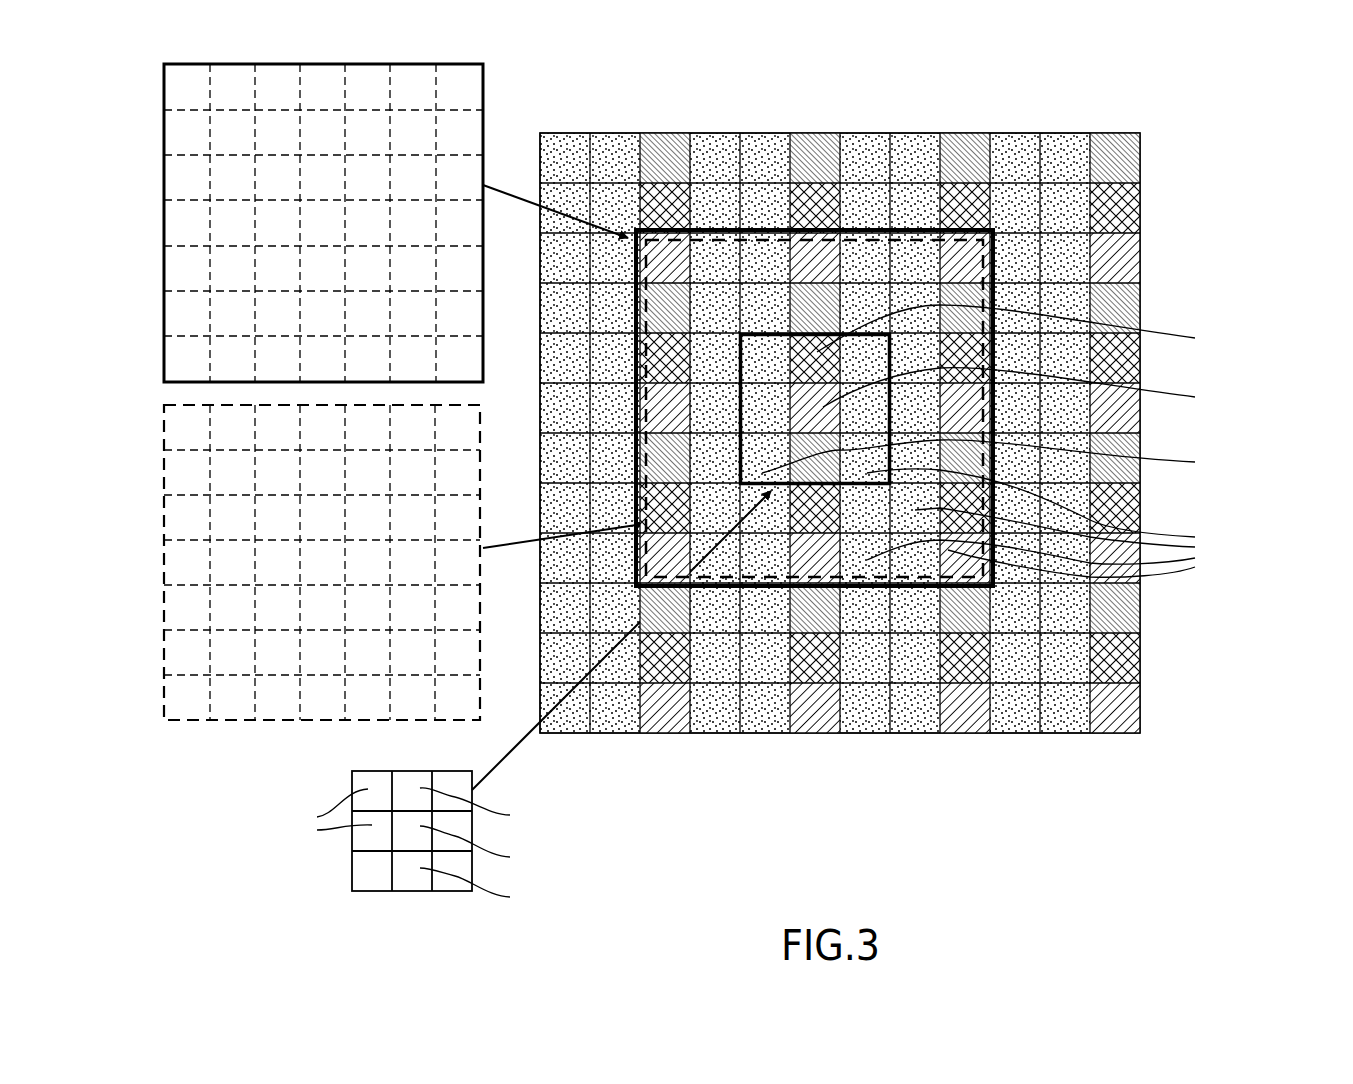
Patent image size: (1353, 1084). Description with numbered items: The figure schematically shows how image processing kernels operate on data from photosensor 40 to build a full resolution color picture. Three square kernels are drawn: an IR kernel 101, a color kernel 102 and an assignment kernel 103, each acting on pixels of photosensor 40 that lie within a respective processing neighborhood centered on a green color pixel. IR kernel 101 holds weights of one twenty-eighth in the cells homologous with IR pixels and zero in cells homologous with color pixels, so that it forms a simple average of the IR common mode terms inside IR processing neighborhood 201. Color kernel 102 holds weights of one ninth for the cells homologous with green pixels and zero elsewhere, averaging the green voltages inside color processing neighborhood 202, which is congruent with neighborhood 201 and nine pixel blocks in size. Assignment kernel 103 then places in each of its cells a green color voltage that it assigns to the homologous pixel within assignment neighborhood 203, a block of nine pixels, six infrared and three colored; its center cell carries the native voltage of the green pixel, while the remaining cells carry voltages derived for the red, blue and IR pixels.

The photosensor 40 is at (943, 392).
The IR kernel 101 is at (142, 84).
The color kernel 102 is at (142, 429).
The assignment kernel 103 is at (323, 771).
The IR processing neighborhood 201 is at (965, 228).
The color processing neighborhood 202 is at (765, 333).
The assignment neighborhood 203 is at (710, 240).